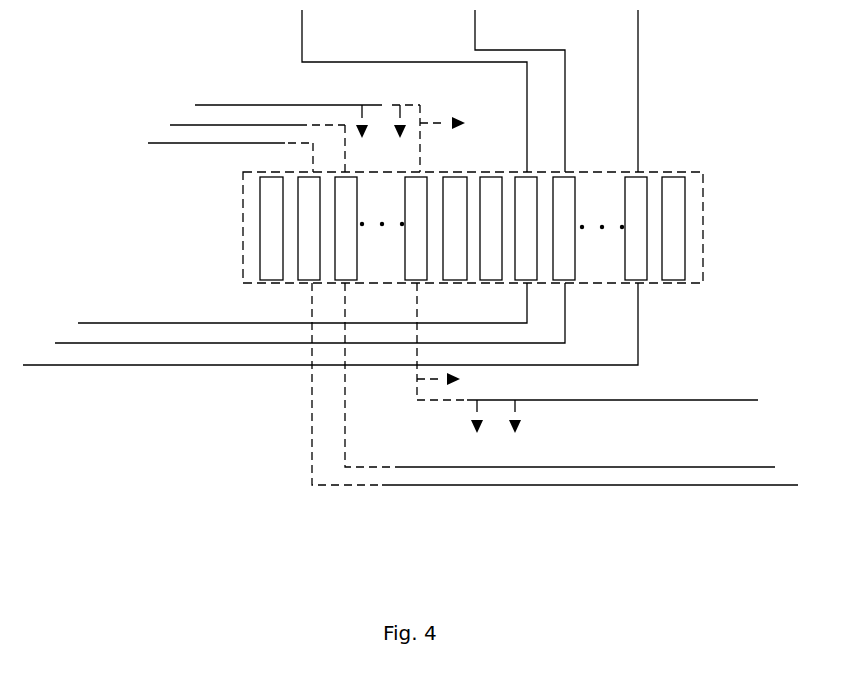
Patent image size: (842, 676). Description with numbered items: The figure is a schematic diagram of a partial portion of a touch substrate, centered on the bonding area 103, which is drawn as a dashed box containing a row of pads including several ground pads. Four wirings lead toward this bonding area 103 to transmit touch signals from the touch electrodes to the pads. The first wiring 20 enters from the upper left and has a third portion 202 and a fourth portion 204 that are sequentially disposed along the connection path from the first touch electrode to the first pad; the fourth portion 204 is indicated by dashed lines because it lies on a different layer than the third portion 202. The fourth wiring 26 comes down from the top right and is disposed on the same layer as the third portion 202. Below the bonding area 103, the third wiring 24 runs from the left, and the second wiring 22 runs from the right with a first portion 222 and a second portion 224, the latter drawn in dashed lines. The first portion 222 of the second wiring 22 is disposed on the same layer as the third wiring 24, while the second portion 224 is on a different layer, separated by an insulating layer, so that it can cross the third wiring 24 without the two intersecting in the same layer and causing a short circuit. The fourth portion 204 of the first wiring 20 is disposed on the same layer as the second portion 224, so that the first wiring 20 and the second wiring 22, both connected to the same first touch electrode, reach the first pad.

The bonding area 103 is at (236, 232).
The first wiring 20 is at (284, 107).
The third portion 202 is at (349, 98).
The fourth portion 204 is at (426, 100).
The fourth wiring 26 is at (506, 91).
The third wiring 24 is at (330, 364).
The second wiring 22 is at (555, 416).
The first portion 222 is at (559, 412).
The second portion 224 is at (414, 316).